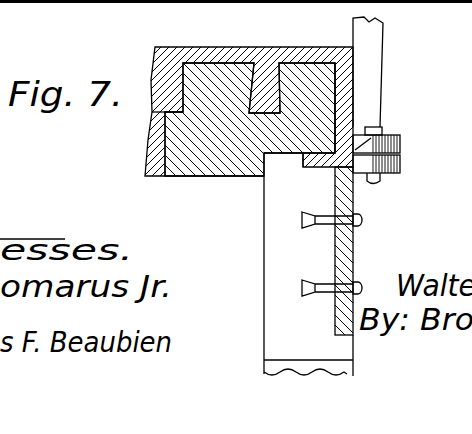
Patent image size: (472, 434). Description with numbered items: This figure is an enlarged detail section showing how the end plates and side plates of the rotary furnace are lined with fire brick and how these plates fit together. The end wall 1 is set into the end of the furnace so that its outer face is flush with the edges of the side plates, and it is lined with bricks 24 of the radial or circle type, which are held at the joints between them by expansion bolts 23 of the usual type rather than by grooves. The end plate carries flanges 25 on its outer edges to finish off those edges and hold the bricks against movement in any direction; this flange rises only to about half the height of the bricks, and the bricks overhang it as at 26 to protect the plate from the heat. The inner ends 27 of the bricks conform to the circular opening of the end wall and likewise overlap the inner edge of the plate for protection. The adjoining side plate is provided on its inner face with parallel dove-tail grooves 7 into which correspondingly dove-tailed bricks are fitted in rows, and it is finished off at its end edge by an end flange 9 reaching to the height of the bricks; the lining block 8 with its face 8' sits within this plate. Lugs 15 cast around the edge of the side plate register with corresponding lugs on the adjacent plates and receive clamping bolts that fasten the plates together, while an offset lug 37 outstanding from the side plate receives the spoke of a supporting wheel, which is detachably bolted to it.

The end wall 1 is at (343, 260).
The dove-tail groove 7 is at (180, 78).
The filler block 8 is at (272, 155).
The block bottom face 8' is at (214, 186).
The end flange 9 is at (347, 112).
The lug 15 is at (397, 157).
The expansion bolt 23 is at (299, 224).
The brick 24 is at (273, 297).
The flange 25 is at (322, 157).
The brick overhang 26 is at (301, 157).
The inner end of brick 27 is at (338, 352).
The offset lug 37 is at (375, 72).